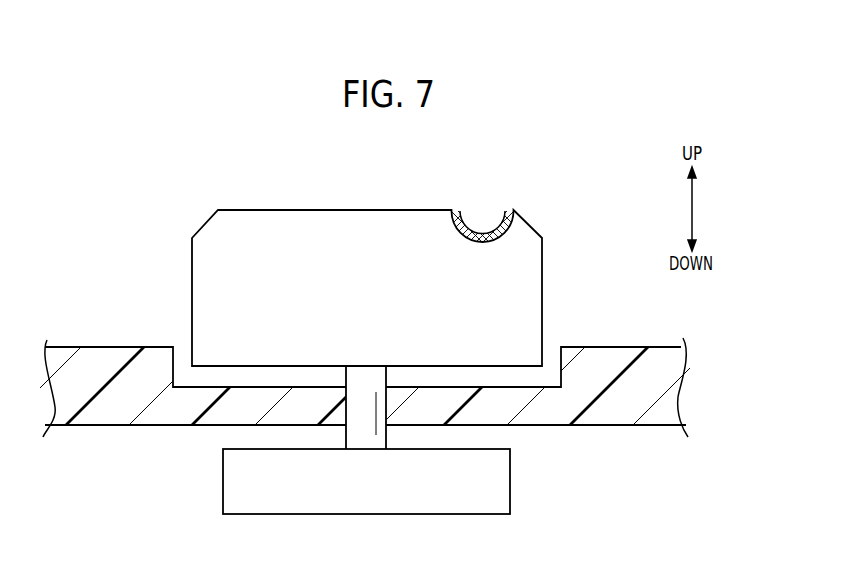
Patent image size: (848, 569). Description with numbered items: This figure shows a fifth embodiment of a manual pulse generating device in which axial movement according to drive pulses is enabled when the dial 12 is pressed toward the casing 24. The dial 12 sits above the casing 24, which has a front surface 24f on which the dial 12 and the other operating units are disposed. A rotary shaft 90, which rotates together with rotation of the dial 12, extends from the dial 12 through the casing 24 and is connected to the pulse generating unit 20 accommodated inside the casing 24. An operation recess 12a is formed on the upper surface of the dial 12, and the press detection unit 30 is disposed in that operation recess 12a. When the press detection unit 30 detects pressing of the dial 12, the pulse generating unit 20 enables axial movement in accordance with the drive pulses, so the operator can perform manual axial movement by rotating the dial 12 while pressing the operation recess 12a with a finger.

The dial 12 is at (327, 208).
The operation recess 12a is at (482, 233).
The press detection unit 30 is at (505, 222).
The casing 24 is at (98, 362).
The front surface 24f is at (603, 347).
The rotary shaft 90 is at (360, 408).
The pulse generating unit 20 is at (511, 490).